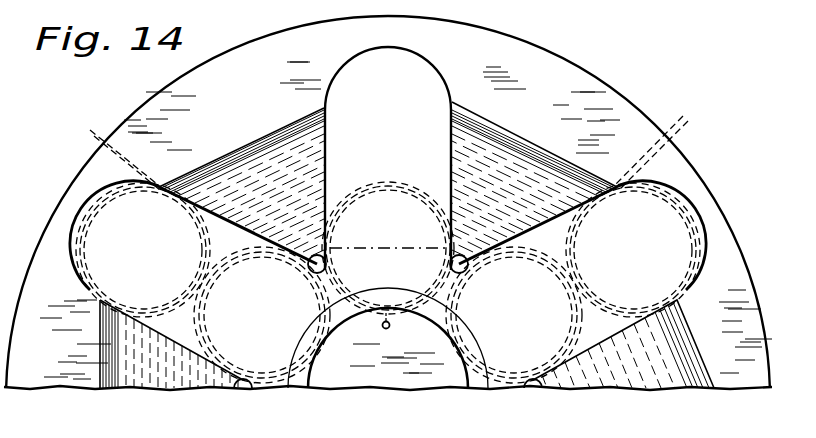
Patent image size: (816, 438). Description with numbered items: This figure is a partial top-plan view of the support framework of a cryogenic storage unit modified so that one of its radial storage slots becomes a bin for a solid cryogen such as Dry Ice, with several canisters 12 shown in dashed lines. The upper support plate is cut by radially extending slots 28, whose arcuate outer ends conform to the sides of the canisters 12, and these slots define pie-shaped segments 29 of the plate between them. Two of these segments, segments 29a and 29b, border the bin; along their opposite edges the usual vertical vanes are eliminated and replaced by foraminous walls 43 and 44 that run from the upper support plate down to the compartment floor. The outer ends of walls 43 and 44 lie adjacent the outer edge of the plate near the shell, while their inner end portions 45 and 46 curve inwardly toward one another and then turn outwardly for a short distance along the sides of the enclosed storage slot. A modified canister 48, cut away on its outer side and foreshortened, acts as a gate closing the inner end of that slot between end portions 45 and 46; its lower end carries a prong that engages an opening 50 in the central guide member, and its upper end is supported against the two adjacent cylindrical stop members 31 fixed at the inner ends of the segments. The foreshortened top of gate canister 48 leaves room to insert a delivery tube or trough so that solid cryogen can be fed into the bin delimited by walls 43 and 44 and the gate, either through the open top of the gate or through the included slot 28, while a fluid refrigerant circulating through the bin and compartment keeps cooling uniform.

The canister 12 is at (200, 244).
The slot 28 is at (423, 101).
The pie-shaped segment 29 is at (200, 379).
The segment 29a is at (300, 198).
The segment 29b is at (540, 198).
The cylindrical stop member 31 is at (311, 272).
The foraminous wall 43 is at (107, 156).
The foraminous wall 44 is at (661, 145).
The inner end portion 45 is at (309, 234).
The inner end portion 46 is at (449, 248).
The modified canister 48 is at (373, 184).
The opening 50 is at (388, 327).